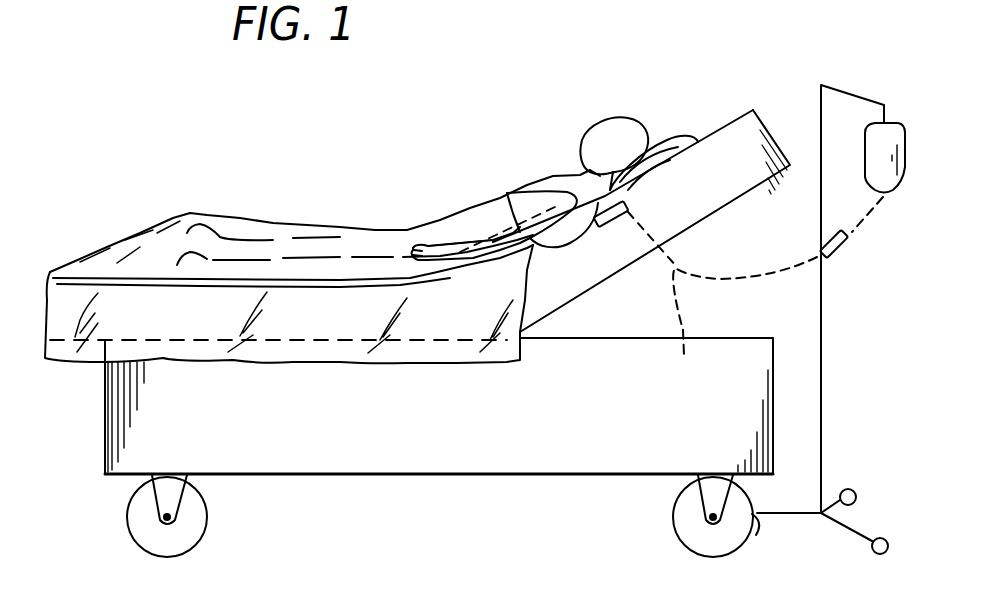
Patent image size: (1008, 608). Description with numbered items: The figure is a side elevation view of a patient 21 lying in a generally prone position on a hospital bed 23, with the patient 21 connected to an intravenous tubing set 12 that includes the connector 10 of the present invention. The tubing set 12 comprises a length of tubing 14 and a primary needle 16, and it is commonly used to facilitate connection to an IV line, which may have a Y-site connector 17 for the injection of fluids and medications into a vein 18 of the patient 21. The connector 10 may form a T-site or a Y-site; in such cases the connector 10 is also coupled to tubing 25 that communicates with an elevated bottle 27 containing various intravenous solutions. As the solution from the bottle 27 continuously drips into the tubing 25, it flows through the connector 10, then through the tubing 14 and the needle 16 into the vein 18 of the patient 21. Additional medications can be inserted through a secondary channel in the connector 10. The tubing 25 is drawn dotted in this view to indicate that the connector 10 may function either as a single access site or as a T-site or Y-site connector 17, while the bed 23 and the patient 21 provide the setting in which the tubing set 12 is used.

The connector 10 is at (630, 208).
The intravenous tubing set 12 is at (547, 264).
The tubing 14 is at (597, 228).
The primary needle 16 is at (493, 237).
The Y-site connector 17 is at (832, 257).
The vein 18 is at (453, 252).
The patient 21 is at (607, 108).
The hospital bed 23 is at (118, 232).
The tubing 25 is at (745, 330).
The elevated bottle 27 is at (900, 197).